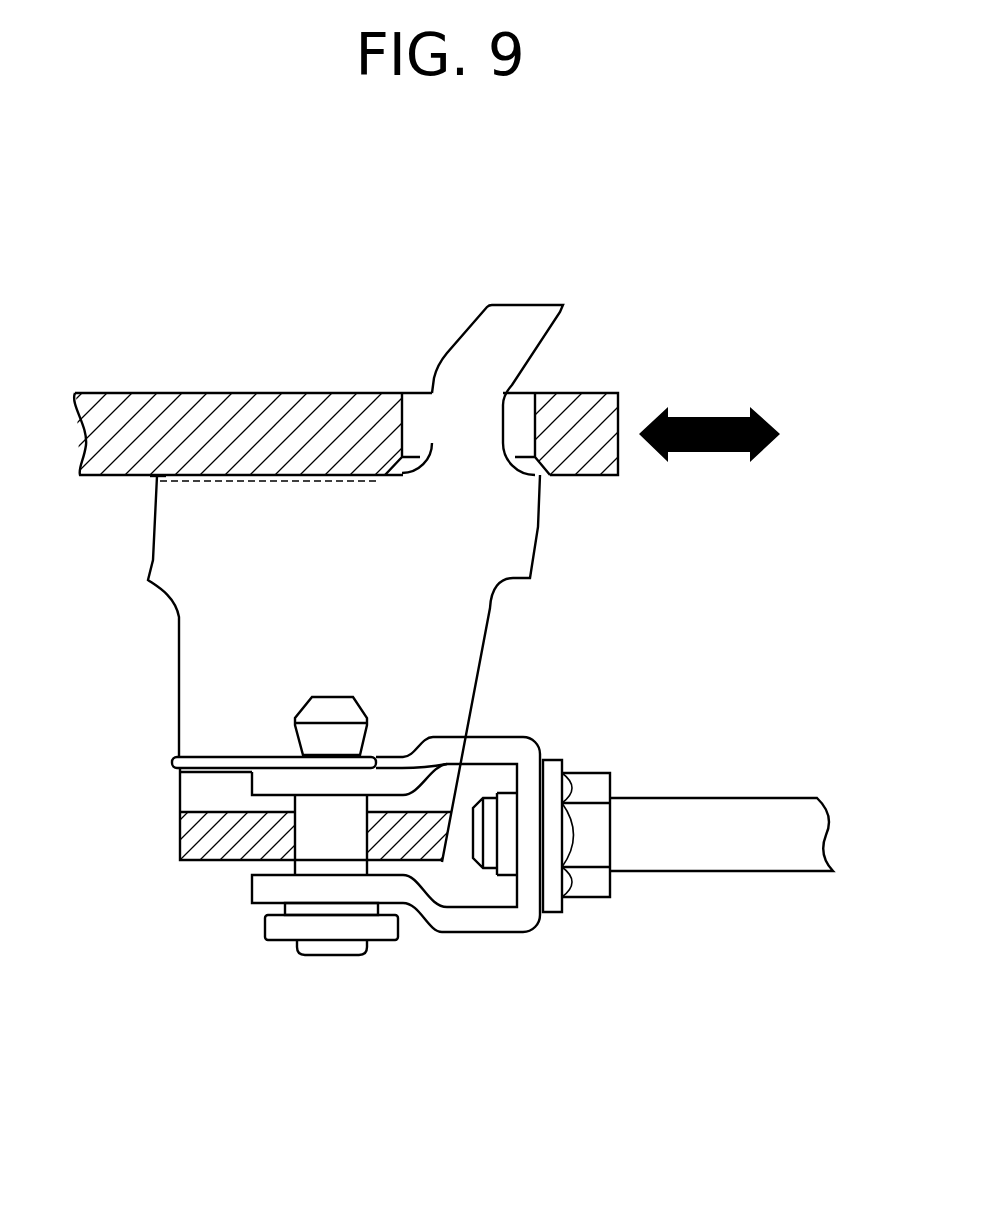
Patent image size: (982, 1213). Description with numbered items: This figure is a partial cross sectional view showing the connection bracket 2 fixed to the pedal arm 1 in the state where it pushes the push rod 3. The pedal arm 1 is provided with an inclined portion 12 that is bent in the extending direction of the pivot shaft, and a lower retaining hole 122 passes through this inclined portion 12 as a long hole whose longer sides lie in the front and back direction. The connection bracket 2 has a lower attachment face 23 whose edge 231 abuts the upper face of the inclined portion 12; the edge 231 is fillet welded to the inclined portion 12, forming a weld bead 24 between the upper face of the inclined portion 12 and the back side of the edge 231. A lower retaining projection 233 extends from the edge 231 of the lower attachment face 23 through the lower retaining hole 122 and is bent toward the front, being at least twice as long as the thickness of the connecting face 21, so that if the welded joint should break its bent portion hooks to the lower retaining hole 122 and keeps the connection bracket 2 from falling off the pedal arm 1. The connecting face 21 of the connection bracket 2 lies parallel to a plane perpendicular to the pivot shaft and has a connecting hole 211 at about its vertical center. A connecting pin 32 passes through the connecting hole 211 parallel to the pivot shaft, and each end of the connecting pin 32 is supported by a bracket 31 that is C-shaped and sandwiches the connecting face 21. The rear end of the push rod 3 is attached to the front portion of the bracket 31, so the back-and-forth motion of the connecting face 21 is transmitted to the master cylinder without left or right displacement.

The pedal arm 1 is at (346, 394).
The inclined portion 12 is at (293, 403).
The lower retaining hole 122 is at (517, 423).
The connection bracket 2 is at (367, 593).
The lower attachment face 23 is at (193, 667).
The lower retaining projection 233 is at (548, 312).
The weld bead 24 is at (157, 477).
The edge of the lower attachment face 231 is at (262, 478).
The connecting face 21 is at (277, 844).
The connecting hole 211 is at (293, 830).
The push rod 3 is at (698, 873).
The bracket 31 is at (356, 861).
The connecting pin 32 is at (328, 950).